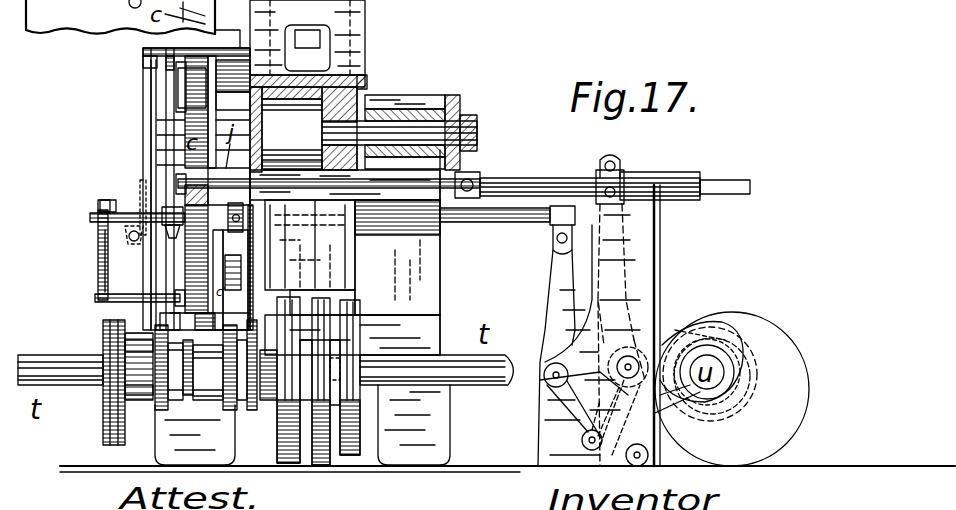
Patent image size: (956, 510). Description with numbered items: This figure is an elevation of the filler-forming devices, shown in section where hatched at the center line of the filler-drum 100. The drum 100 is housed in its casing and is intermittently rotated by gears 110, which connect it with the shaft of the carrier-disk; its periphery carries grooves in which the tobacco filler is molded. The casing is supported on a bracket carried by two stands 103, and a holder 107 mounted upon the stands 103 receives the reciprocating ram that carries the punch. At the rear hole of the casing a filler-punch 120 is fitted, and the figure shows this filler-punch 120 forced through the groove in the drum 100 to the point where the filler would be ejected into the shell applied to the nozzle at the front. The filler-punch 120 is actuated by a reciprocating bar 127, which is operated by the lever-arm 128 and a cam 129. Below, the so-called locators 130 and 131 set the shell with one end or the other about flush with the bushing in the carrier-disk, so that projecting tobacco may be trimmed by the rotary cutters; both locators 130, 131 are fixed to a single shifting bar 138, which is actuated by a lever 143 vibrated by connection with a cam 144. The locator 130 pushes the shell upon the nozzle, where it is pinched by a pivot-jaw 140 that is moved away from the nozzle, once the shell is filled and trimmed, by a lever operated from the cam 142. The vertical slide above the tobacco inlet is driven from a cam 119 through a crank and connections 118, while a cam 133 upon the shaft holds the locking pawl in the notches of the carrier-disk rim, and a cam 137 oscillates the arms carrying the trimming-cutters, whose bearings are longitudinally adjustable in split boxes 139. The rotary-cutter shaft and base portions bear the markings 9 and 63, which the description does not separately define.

The split boxes 139 is at (128, 5).
The connections 118 is at (151, 102).
The locator 130 is at (176, 193).
The locator 131 is at (98, 262).
The cam 137 is at (104, 325).
The cam 119 is at (160, 410).
The cam 133 is at (226, 410).
The cam 142 is at (252, 410).
The stands 103 is at (440, 428).
The base 63 is at (496, 470).
The filler-punch 120 is at (345, 252).
The shifting bar 138 is at (500, 226).
The lever 143 is at (553, 282).
The reciprocating bar 127 is at (535, 171).
The lever-arm 128 is at (650, 250).
The cam 129 is at (715, 350).
The cam 144 is at (748, 376).
The cover 9 is at (360, 85).
The holder 107 is at (407, 98).
The gears 110 is at (457, 95).
The filler-drum 100 is at (303, 129).
The pivot-jaw 140 is at (250, 232).